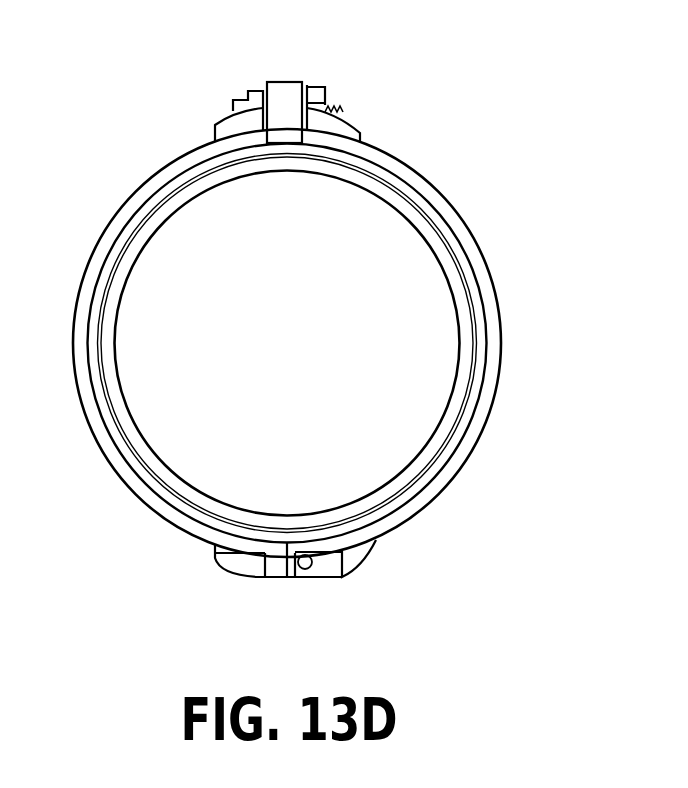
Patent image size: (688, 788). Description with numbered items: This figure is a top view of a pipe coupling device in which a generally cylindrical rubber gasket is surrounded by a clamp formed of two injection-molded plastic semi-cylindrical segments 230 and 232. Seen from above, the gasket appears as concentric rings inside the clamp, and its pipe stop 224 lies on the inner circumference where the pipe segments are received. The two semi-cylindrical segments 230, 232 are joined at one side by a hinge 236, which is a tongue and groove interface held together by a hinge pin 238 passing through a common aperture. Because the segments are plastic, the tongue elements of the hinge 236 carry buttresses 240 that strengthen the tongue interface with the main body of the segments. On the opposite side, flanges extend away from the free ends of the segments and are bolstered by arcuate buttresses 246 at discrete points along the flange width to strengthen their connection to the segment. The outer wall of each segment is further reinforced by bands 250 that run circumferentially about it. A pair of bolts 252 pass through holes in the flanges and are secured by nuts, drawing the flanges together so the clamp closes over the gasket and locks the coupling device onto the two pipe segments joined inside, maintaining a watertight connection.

The pipe stop 224 is at (432, 224).
The semi-cylindrical segment 230 is at (105, 227).
The semi-cylindrical segment 232 is at (422, 177).
The hinge 236 is at (268, 600).
The hinge pin 238 is at (312, 568).
The buttresses 240 is at (240, 574).
The arcuate buttresses 246 is at (214, 125).
The bands 250 is at (321, 86).
The bolts 252 is at (249, 90).